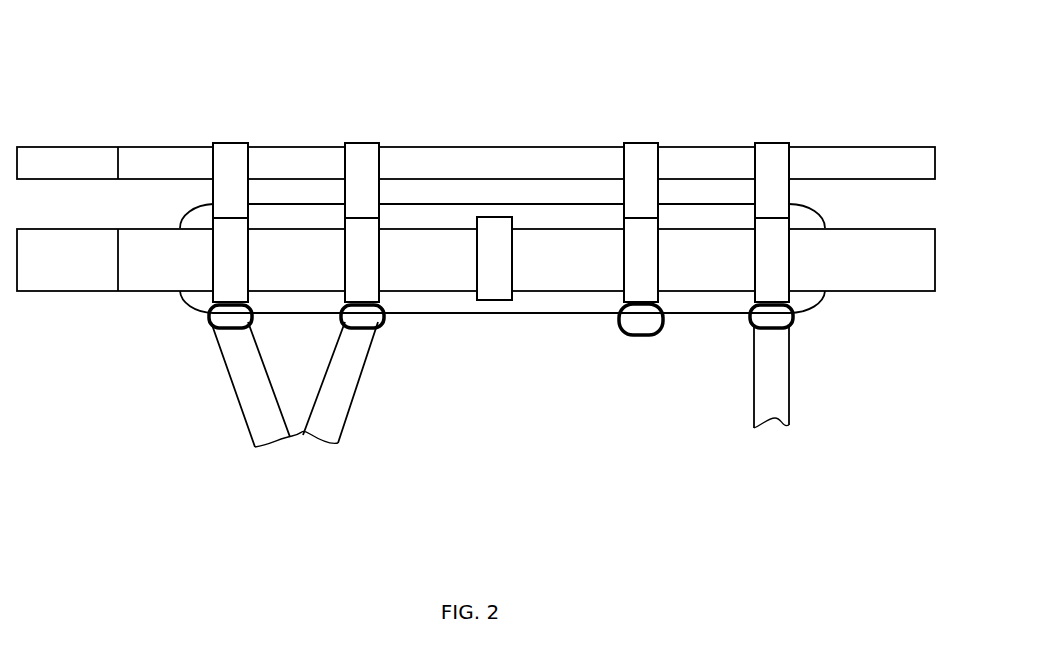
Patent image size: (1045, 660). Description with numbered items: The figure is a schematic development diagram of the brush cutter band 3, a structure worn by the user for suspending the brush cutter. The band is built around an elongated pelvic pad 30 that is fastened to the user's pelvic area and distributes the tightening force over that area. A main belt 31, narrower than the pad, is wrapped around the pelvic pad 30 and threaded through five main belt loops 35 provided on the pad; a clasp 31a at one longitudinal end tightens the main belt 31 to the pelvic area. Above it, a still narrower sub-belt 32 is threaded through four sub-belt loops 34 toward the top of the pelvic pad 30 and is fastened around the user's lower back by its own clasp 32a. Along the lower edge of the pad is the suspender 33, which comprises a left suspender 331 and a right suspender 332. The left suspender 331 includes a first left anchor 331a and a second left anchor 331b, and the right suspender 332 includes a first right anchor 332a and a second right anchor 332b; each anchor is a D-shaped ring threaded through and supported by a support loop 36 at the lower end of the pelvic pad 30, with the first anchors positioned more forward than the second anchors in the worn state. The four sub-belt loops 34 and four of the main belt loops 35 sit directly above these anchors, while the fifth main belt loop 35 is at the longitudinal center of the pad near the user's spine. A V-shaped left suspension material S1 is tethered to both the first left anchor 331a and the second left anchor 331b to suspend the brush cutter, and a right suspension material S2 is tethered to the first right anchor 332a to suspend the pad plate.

The brush cutter band 3 is at (774, 67).
The pelvic pad 30 is at (533, 202).
The main belt 31 is at (476, 312).
The clasp 31a is at (80, 282).
The sub-belt 32 is at (476, 117).
The clasp 32a is at (77, 157).
The suspender 33 is at (517, 398).
The sub-belt loops 34 is at (230, 150).
The main belt loops 35 is at (226, 265).
The support loop 36 is at (245, 318).
The left suspender 331 is at (333, 398).
The first left anchor 331a is at (215, 328).
The second left anchor 331b is at (383, 328).
The right suspender 332 is at (692, 400).
The first right anchor 332a is at (790, 327).
The second right anchor 332b is at (648, 333).
The left suspension material S1 is at (257, 397).
The right suspension material S2 is at (783, 393).